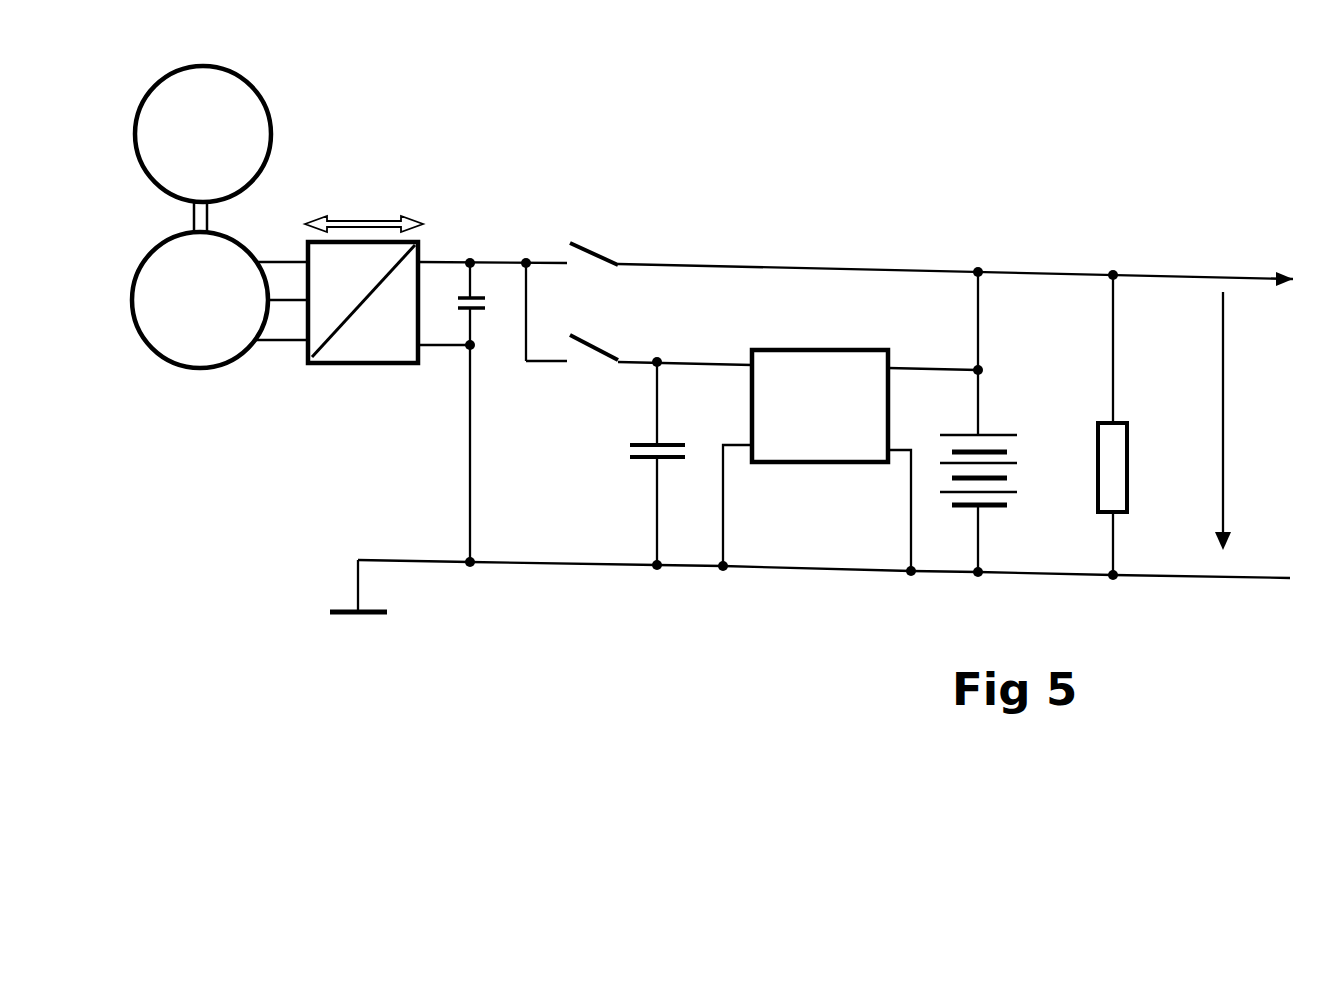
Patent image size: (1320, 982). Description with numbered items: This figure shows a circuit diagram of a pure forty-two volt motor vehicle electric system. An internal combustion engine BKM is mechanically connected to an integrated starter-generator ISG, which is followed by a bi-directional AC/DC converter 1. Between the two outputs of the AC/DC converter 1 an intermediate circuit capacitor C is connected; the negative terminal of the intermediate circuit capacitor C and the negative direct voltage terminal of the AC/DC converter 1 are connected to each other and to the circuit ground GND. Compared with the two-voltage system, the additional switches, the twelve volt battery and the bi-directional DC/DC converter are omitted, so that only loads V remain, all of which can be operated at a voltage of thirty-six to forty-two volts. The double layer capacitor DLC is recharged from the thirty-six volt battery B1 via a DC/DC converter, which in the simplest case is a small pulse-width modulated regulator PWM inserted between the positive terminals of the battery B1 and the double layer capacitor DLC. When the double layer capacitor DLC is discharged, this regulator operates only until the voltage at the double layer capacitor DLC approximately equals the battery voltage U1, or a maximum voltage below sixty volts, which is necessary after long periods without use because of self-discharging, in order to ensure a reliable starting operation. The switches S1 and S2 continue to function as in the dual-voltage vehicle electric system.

The bi-directional AC/DC converter 1 is at (360, 363).
The internal combustion engine BKM is at (237, 155).
The integrated starter-generator ISG is at (232, 318).
The intermediate circuit capacitor C is at (483, 412).
The switch S1 is at (593, 231).
The switch S2 is at (594, 375).
The double layer capacitor DLC is at (632, 463).
The pulse-width modulated regulator PWM is at (858, 425).
The 36 V battery B1 is at (986, 422).
The loads V is at (1127, 425).
The battery voltage U1 is at (1239, 421).
The circuit ground GND is at (356, 610).